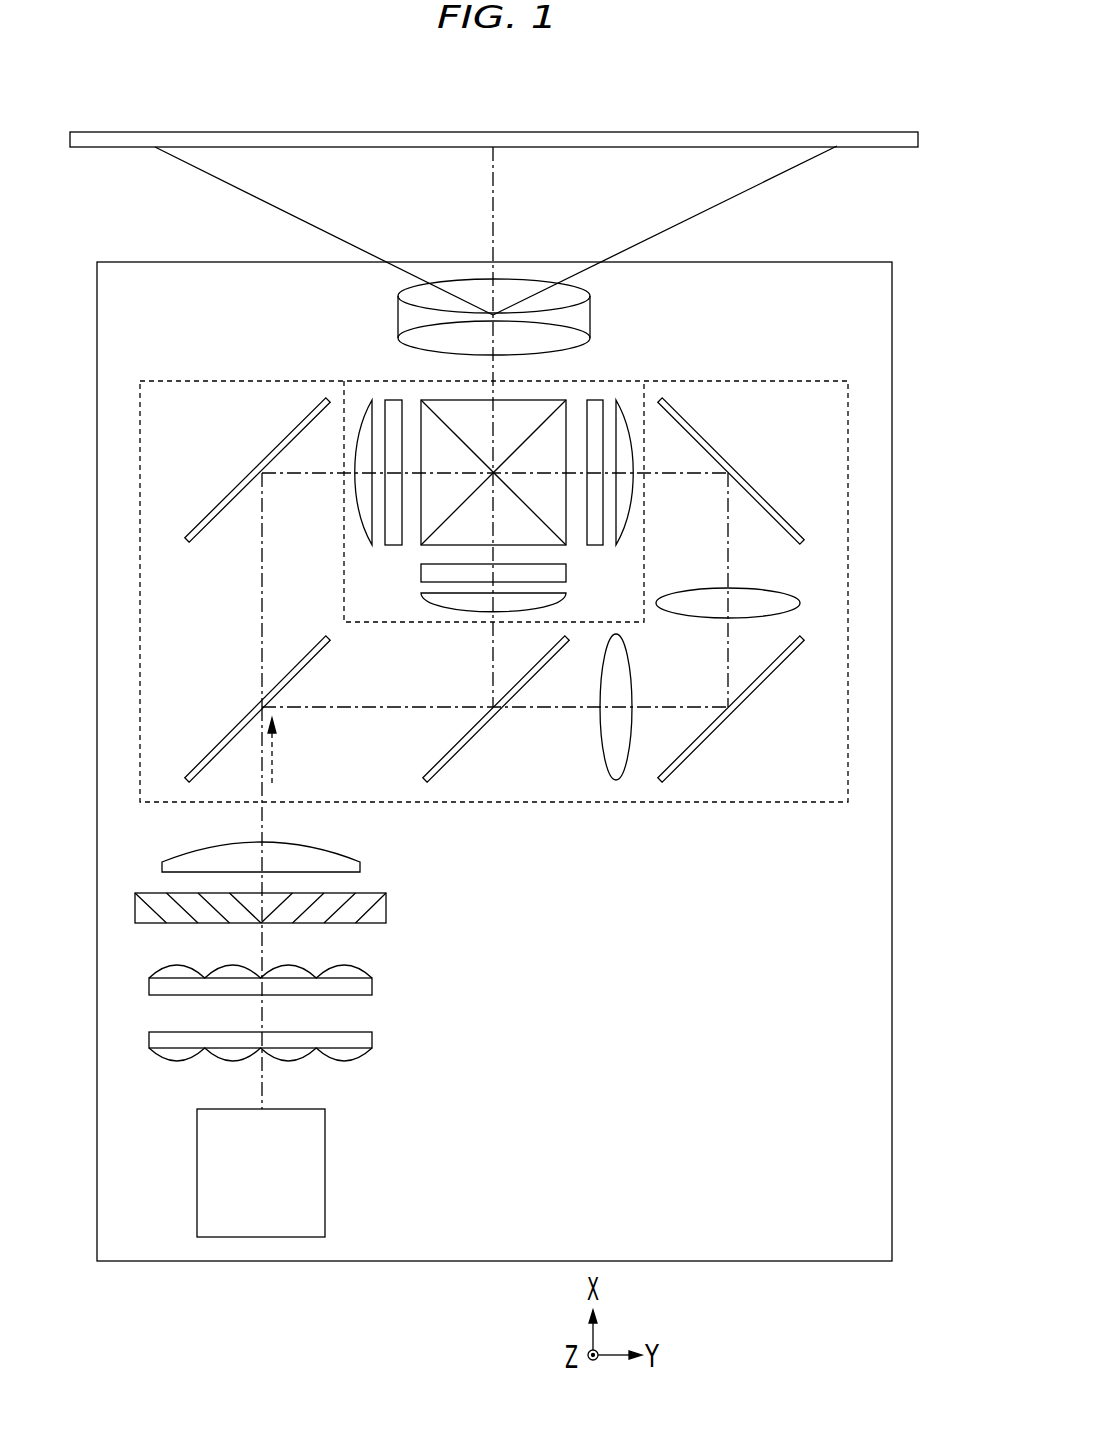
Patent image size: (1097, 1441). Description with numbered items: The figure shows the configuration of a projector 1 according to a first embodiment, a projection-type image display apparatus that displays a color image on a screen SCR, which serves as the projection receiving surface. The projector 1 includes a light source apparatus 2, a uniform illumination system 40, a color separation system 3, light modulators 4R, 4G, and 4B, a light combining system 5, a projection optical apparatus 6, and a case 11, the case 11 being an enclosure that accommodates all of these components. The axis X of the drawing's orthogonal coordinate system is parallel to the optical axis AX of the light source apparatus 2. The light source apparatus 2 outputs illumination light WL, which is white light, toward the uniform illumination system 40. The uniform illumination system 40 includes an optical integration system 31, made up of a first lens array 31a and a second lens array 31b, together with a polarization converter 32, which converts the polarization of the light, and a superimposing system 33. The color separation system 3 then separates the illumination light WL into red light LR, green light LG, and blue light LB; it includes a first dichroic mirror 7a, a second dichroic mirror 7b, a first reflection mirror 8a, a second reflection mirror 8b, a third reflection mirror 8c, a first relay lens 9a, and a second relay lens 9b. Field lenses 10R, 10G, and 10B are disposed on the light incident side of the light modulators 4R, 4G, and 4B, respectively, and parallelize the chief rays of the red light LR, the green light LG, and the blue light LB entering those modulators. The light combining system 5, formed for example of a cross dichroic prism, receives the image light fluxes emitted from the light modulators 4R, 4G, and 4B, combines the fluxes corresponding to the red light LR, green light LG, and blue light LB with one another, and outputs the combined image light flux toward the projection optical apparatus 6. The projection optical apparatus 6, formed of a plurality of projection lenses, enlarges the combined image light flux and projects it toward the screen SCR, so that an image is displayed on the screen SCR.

The projector 1 is at (876, 238).
The light source apparatus 2 is at (325, 1158).
The color separation system 3 is at (140, 408).
The light modulator 4R is at (395, 398).
The light modulator 4G is at (421, 573).
The light modulator 4B is at (596, 398).
The light combining system 5 is at (518, 410).
The projection optical apparatus 6 is at (473, 290).
The first dichroic mirror 7a is at (222, 742).
The second dichroic mirror 7b is at (470, 742).
The first reflection mirror 8a is at (233, 490).
The second reflection mirror 8b is at (757, 690).
The third reflection mirror 8c is at (757, 490).
The first relay lens 9a is at (600, 730).
The second relay lens 9b is at (752, 588).
The field lens 10R is at (368, 398).
The field lens 10G is at (421, 603).
The field lens 10B is at (620, 398).
The case 11 is at (893, 540).
The optical integration system 31 is at (335, 1019).
The first lens array 31a is at (372, 1038).
The second lens array 31b is at (372, 985).
The polarization converter 32 is at (386, 905).
The superimposing system 33 is at (345, 850).
The uniform illumination system 40 is at (361, 957).
The screen SCR is at (876, 138).
The optical axis AX is at (262, 1085).
The illumination light WL is at (272, 762).
The red light LR is at (262, 612).
The green light LG is at (493, 662).
The blue light LB is at (728, 662).